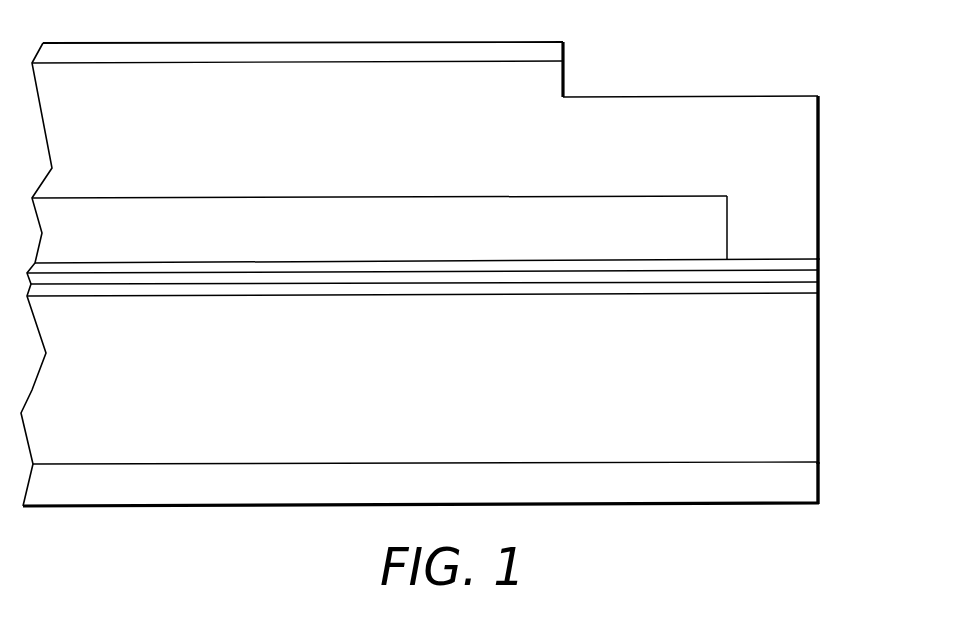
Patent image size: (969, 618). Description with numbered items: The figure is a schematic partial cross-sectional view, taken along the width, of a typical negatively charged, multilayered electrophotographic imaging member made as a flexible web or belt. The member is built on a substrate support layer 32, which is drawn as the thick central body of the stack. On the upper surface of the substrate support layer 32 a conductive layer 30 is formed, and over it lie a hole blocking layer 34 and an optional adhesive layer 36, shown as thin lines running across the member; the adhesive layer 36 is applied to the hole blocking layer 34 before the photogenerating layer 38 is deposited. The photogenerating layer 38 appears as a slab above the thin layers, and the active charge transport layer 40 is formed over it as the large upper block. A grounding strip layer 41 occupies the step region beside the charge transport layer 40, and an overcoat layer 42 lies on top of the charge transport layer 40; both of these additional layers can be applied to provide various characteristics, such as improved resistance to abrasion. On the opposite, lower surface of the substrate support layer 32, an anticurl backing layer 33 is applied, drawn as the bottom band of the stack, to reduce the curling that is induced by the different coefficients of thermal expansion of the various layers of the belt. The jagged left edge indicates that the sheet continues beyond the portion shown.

The conductive layer 30 is at (820, 288).
The substrate support layer 32 is at (810, 378).
The anticurl backing layer 33 is at (810, 484).
The hole blocking layer 34 is at (820, 273).
The adhesive layer 36 is at (820, 262).
The photogenerating layer 38 is at (718, 212).
The active charge transport layer 40 is at (566, 82).
The grounding strip layer 41 is at (805, 104).
The overcoat layer 42 is at (566, 50).